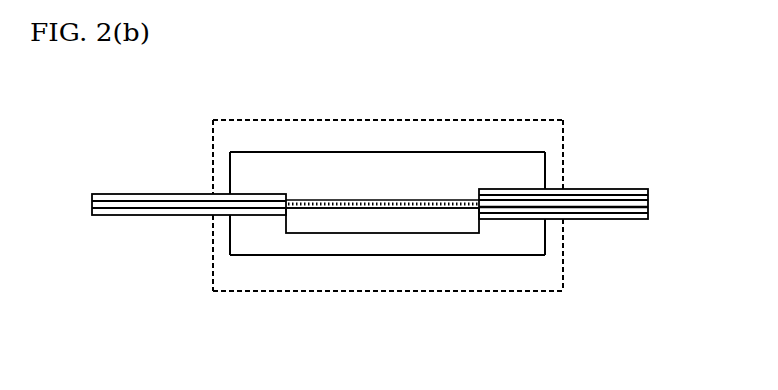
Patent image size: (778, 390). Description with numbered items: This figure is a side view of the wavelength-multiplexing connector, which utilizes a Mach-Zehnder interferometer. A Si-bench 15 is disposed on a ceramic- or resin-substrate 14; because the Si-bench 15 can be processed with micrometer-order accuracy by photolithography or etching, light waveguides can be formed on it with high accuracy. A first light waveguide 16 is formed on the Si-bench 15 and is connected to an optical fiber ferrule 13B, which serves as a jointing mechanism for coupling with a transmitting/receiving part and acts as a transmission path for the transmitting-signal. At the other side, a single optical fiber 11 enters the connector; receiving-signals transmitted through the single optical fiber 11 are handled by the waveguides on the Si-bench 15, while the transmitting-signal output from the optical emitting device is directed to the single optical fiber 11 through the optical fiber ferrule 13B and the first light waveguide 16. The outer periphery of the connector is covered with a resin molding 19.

The single optical fiber 11 is at (143, 192).
The optical fiber ferrule 13B is at (650, 208).
The substrate 14 is at (262, 152).
The Si-bench 15 is at (317, 225).
The first light waveguide 16 is at (420, 210).
The resin molding 19 is at (565, 137).